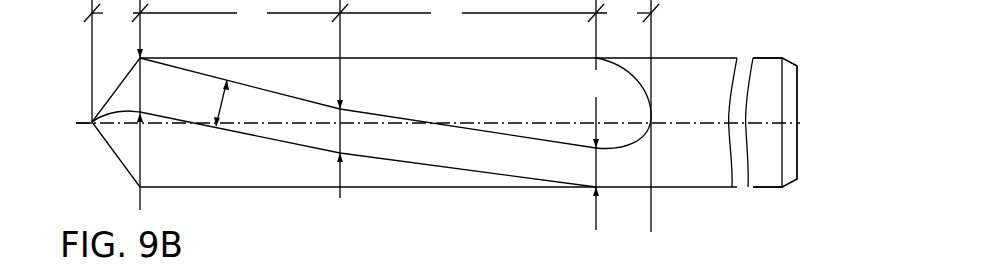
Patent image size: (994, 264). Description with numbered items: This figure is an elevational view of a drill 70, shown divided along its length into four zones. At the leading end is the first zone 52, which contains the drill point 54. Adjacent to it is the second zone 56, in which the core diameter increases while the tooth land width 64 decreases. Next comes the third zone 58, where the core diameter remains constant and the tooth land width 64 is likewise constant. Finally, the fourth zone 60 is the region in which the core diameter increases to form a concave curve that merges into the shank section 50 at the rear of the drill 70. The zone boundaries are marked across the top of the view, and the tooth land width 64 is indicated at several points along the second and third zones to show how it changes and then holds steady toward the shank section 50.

The shank section 50 is at (686, 174).
The first zone 52 is at (131, 23).
The drill point 54 is at (88, 127).
The second zone 56 is at (265, 23).
The third zone 58 is at (460, 23).
The fourth zone 60 is at (635, 23).
The tooth land width 64 is at (196, 90).
The drill 70 is at (770, 50).